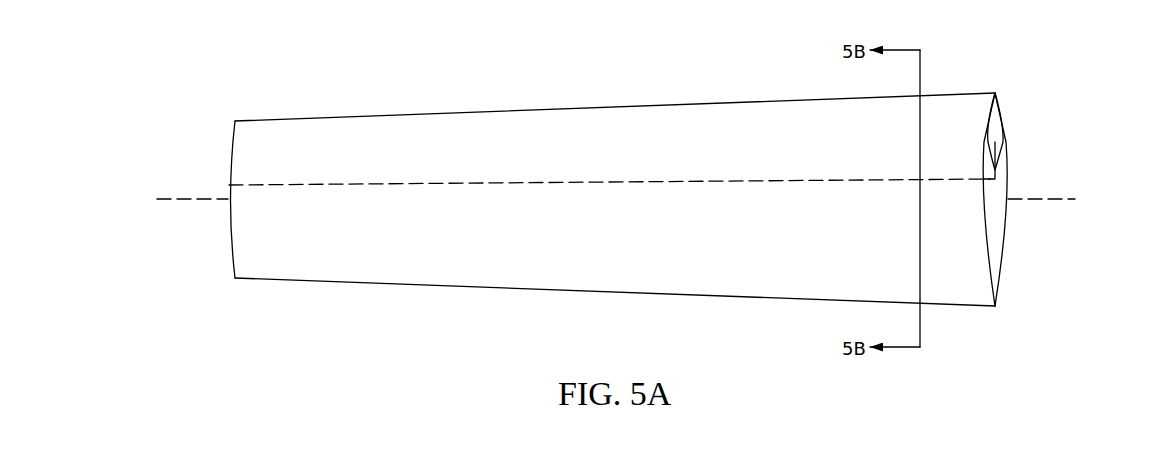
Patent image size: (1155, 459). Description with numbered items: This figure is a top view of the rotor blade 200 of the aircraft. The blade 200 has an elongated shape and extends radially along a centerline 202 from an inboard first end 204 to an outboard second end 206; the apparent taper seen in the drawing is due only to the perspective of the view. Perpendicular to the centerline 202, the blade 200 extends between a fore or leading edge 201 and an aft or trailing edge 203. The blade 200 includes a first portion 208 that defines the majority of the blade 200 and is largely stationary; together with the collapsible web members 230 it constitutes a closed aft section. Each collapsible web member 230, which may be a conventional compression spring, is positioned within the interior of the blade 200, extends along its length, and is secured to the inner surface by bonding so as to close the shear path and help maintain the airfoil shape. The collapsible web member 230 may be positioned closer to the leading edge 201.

The rotor blade 200 is at (631, 96).
The leading edge 201 is at (716, 97).
The centerline 202 is at (178, 198).
The trailing edge 203 is at (710, 299).
The inboard first end 204 is at (994, 90).
The outboard second end 206 is at (226, 110).
The first portion 208 is at (1003, 251).
The collapsible web member 230 is at (809, 130).